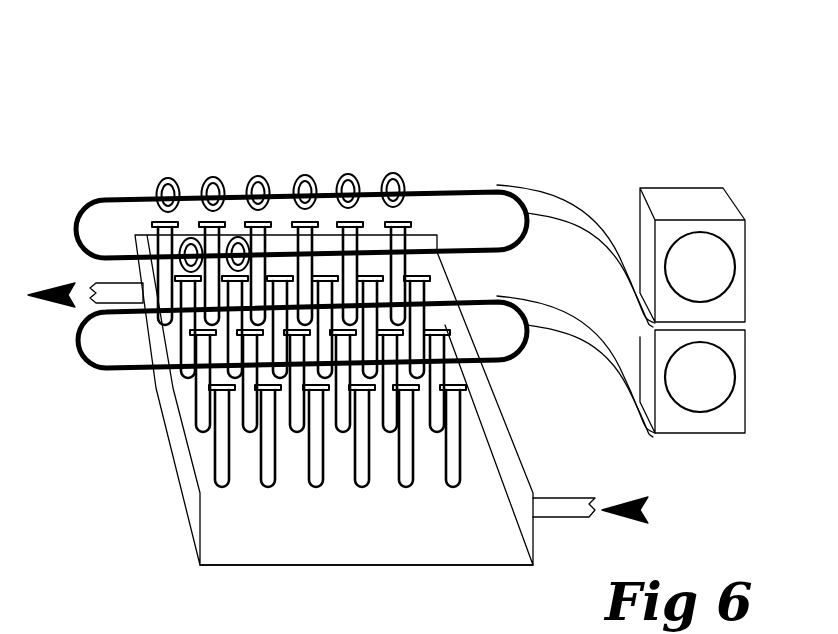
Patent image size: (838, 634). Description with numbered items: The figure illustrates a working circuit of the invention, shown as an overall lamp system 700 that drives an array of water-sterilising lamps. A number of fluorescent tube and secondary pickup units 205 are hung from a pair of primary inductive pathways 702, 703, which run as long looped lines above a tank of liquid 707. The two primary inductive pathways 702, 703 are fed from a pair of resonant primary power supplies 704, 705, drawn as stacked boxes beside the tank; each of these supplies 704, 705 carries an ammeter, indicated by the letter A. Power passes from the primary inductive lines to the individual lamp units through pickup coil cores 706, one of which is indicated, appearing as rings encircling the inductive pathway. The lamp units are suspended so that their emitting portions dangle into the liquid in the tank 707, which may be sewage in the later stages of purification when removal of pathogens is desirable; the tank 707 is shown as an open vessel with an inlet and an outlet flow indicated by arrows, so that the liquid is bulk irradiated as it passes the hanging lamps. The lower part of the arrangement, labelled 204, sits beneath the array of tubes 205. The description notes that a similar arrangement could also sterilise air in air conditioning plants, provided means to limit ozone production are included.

The heat exchange / processing assembly 700 is at (467, 145).
The primary inductive pathway 702 is at (500, 188).
The primary inductive pathway 703 is at (592, 382).
The resonant primary power supply 704 is at (823, 230).
The resonant primary power supply 705 is at (813, 366).
The pickup coil core 706 is at (233, 142).
The tank of liquid 707 is at (163, 413).
The sample tubes 205 is at (352, 493).
The sample tube rack 204 is at (290, 633).